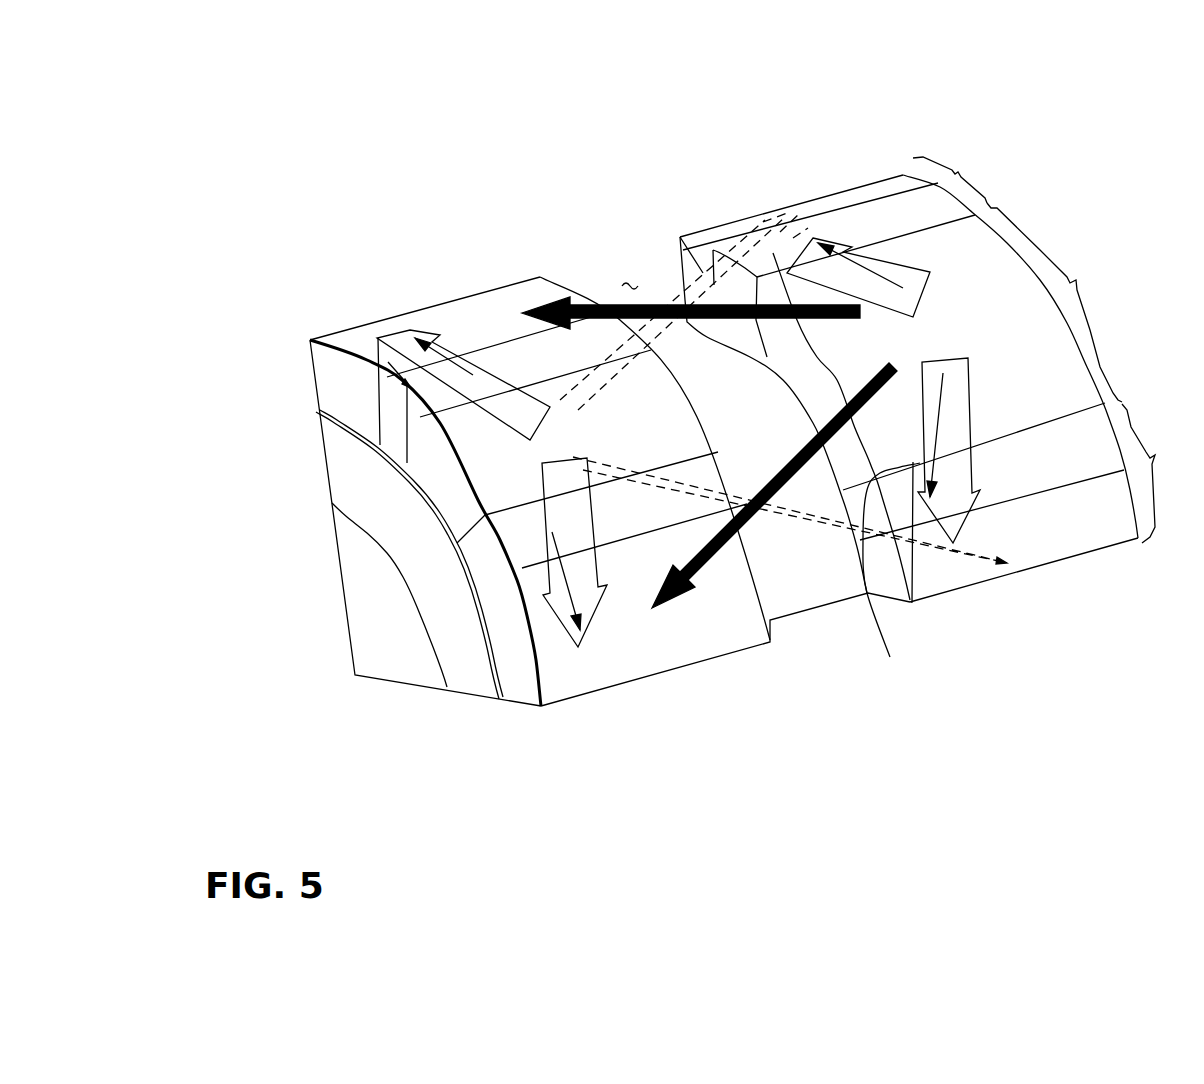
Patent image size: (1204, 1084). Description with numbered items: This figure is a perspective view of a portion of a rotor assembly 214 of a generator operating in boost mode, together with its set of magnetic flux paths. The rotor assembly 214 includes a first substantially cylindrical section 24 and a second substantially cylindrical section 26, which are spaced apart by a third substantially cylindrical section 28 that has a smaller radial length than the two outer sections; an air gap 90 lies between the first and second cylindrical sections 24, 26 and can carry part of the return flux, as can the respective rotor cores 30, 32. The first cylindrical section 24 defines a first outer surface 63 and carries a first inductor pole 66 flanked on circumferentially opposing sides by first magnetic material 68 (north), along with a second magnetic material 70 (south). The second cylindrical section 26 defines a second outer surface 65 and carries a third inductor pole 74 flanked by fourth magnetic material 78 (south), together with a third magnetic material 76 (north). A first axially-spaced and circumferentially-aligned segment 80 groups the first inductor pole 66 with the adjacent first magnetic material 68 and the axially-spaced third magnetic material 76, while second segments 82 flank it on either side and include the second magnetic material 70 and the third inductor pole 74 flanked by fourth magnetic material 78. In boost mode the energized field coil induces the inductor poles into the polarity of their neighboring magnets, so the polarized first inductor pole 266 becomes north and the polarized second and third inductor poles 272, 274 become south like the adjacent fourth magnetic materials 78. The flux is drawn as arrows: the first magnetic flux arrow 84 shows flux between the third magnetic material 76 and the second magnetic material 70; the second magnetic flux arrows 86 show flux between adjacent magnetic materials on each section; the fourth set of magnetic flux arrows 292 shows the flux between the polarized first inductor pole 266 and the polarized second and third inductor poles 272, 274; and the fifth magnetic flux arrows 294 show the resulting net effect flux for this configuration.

The rotor assembly 214 is at (440, 122).
The first substantially cylindrical section 24 is at (486, 296).
The second substantially cylindrical section 26 is at (738, 207).
The third substantially cylindrical section 28 is at (670, 296).
The rotor core 30 is at (341, 622).
The rotor core 32 is at (1128, 440).
The first outer surface 63 is at (548, 291).
The second outer surface 65 is at (713, 241).
The first inductor pole 66 is at (440, 488).
The first magnetic material 68 is at (400, 435).
The second magnetic material 70 is at (530, 683).
The third inductor pole 74 is at (1010, 540).
The third magnetic material 76 is at (1068, 355).
The fourth magnetic material 78 is at (890, 215).
The first axially-spaced and circumferentially-aligned segment 80 is at (1020, 356).
The second axially-spaced and circumferentially-aligned segment 82 is at (1044, 347).
The first magnetic flux arrow 84 is at (600, 312).
The second magnetic flux arrows 86 is at (437, 335).
The air gap 90 is at (628, 280).
The first inductor pole 266 is at (443, 470).
The second inductor pole 272 is at (902, 182).
The third inductor pole 274 is at (1112, 503).
The fourth set of magnetic flux arrows 292 is at (675, 235).
The fifth magnetic flux arrows 294 is at (383, 363).